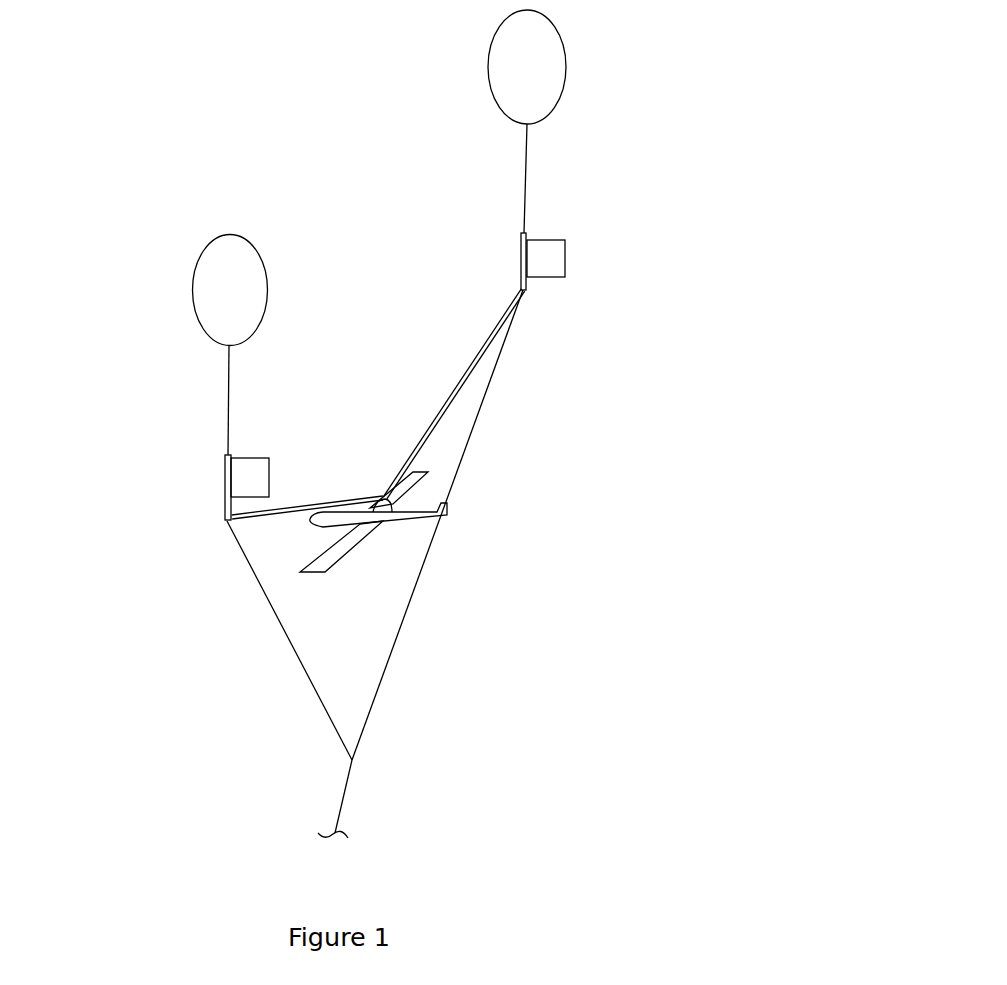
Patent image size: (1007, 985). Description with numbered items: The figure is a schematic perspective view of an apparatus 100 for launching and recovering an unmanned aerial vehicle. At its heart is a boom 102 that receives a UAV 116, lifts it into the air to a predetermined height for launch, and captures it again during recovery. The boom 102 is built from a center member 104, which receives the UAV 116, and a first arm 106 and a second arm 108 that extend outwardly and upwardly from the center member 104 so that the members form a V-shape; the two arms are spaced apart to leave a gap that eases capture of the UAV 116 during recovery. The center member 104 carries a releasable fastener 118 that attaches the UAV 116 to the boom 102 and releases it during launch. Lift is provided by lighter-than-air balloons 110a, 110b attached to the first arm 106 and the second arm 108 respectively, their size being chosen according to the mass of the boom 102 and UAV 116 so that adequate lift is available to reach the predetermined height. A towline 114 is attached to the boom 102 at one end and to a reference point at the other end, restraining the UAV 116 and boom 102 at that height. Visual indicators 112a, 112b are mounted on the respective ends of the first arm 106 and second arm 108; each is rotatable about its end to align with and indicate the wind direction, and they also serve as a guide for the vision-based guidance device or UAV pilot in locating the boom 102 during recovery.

The apparatus 100 is at (178, 364).
The boom 102 is at (475, 432).
The center member 104 is at (380, 497).
The first arm 106 is at (450, 397).
The second arm 108 is at (337, 497).
The lighter-than-air balloon 110a is at (566, 88).
The lighter-than-air balloon 110b is at (268, 287).
The visual indicator 112a is at (557, 260).
The visual indicator 112b is at (235, 480).
The towline 114 is at (342, 802).
The UAV 116 is at (323, 527).
The releasable fastener 118 is at (403, 512).